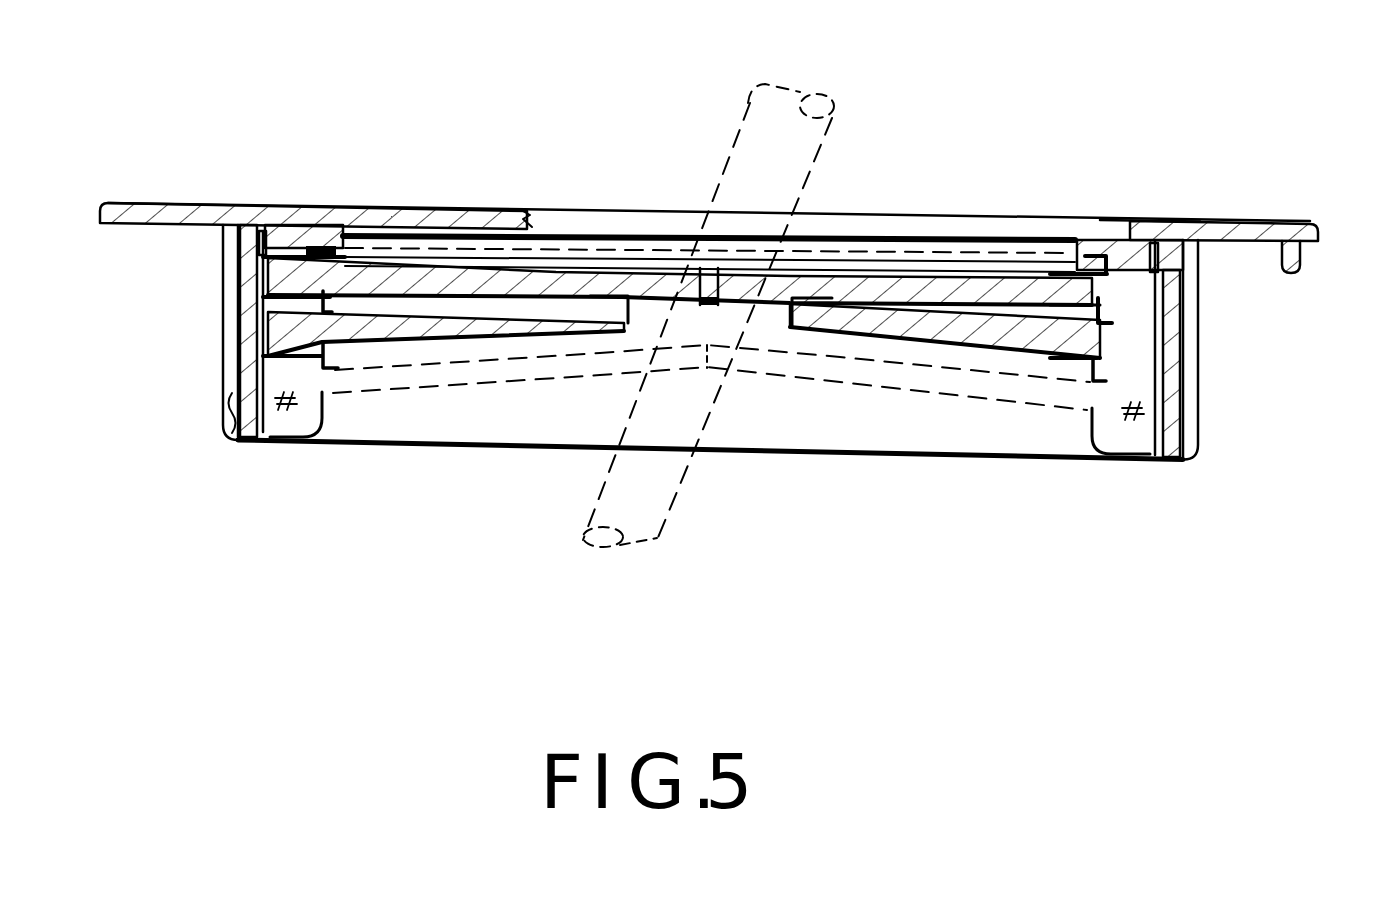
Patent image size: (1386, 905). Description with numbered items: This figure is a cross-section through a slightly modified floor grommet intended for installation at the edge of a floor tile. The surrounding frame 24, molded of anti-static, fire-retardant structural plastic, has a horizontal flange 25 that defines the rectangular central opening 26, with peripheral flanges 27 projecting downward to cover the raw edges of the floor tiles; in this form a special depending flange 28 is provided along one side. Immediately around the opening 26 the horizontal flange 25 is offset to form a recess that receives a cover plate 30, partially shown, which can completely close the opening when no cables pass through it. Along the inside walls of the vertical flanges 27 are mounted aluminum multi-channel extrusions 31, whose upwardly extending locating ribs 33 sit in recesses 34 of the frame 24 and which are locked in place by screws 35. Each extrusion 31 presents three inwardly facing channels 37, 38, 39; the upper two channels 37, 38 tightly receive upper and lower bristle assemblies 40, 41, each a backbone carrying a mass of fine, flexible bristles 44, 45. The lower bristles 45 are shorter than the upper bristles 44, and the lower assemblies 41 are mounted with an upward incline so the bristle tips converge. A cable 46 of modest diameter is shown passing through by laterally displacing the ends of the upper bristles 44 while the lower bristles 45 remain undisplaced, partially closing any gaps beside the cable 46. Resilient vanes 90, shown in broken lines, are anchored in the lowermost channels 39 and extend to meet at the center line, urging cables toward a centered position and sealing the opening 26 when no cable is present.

The surrounding frame 24 is at (1148, 208).
The horizontal flange portion 25 is at (1230, 220).
The rectangular central opening 26 is at (1054, 221).
The peripheral flanges 27 is at (1185, 364).
The special depending flange 28 is at (1302, 276).
The cover plate 30 is at (407, 213).
The channel extrusions 31 is at (260, 357).
The locating ribs 33 is at (296, 236).
The recesses 34 is at (261, 237).
The screws 35 is at (1205, 445).
The upper channel 37 is at (225, 250).
The upper channel 38 is at (252, 306).
The lowermost channel 39 is at (325, 432).
The upper bristle assembly 40 is at (556, 282).
The lower bristle assembly 41 is at (499, 350).
The upper bristles 44 is at (651, 287).
The lower bristles 45 is at (583, 320).
The cable 46 is at (750, 103).
The resilient vanes 90 is at (583, 345).